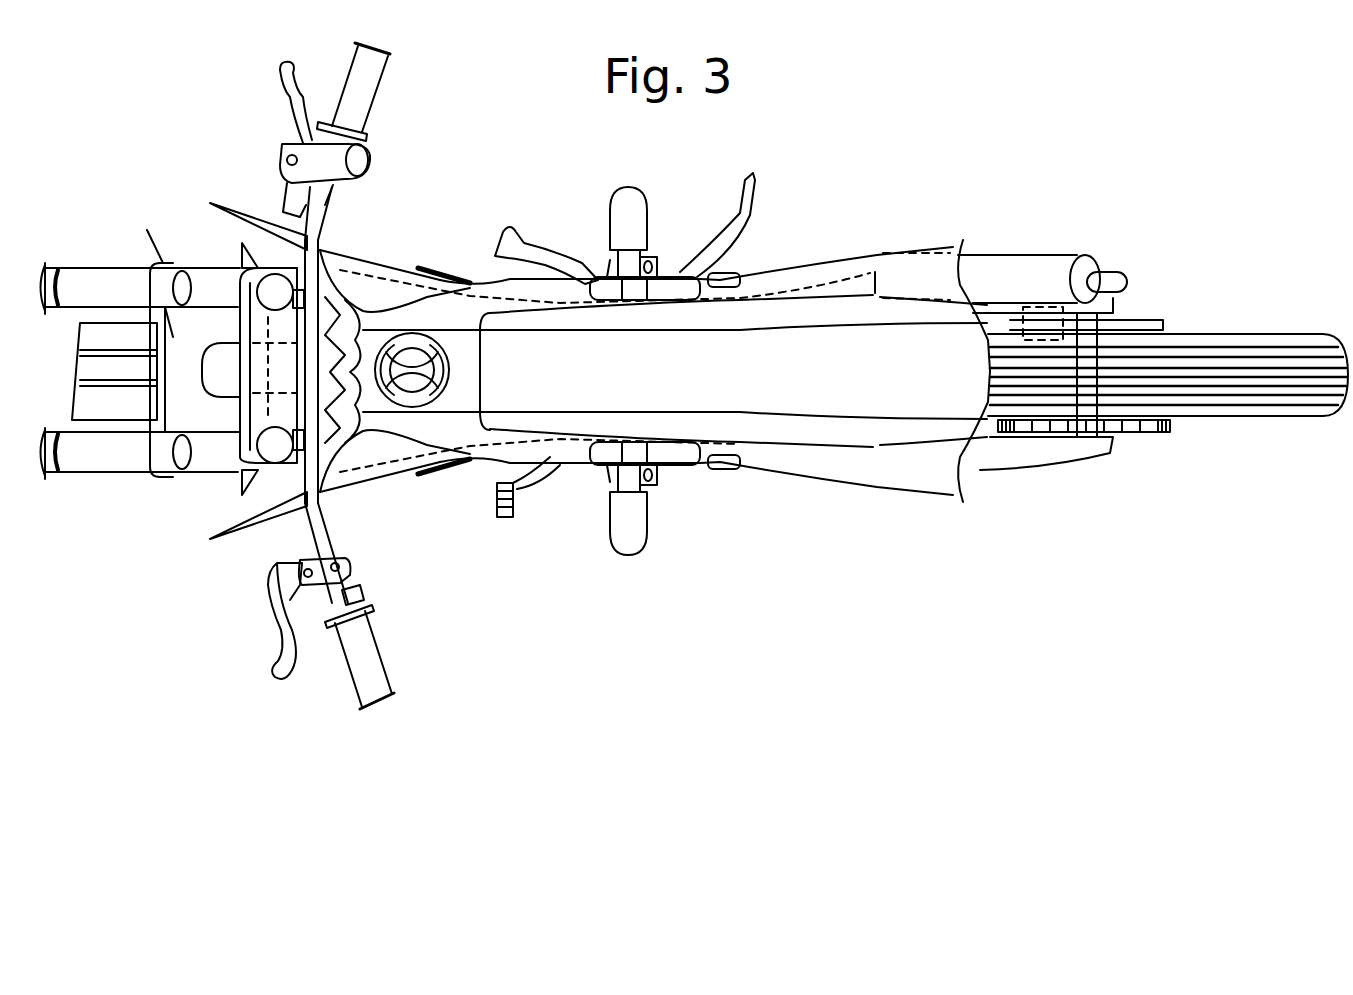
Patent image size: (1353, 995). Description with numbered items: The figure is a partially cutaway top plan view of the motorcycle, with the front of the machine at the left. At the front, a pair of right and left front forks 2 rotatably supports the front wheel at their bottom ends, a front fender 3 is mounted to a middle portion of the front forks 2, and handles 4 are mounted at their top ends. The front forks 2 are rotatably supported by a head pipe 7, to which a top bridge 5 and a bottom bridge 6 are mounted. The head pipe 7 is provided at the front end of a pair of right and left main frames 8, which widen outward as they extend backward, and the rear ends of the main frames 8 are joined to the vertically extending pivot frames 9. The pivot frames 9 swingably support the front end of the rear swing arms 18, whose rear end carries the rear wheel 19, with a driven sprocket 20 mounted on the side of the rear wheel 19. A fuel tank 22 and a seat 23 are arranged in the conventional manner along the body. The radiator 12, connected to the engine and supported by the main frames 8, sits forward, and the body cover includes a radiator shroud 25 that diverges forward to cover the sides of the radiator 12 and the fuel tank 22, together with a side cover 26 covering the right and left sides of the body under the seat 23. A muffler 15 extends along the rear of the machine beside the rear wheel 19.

The front forks 2 is at (97, 277).
The front fender 3 is at (93, 405).
The handles 4 is at (313, 220).
The top bridge 5 is at (220, 270).
The bottom bridge 6 is at (182, 267).
The head pipe 7 is at (225, 383).
The main frames 8 is at (440, 453).
The pivot frames 9 is at (673, 473).
The radiator 12 is at (247, 437).
The muffler 15 is at (1018, 263).
The rear swing arms 18 is at (1053, 467).
The rear wheel 19 is at (1290, 340).
The driven sprocket 20 is at (1160, 433).
The fuel tank 22 is at (457, 333).
The seat 23 is at (798, 343).
The radiator shroud 25 is at (243, 205).
The side cover 26 is at (903, 277).